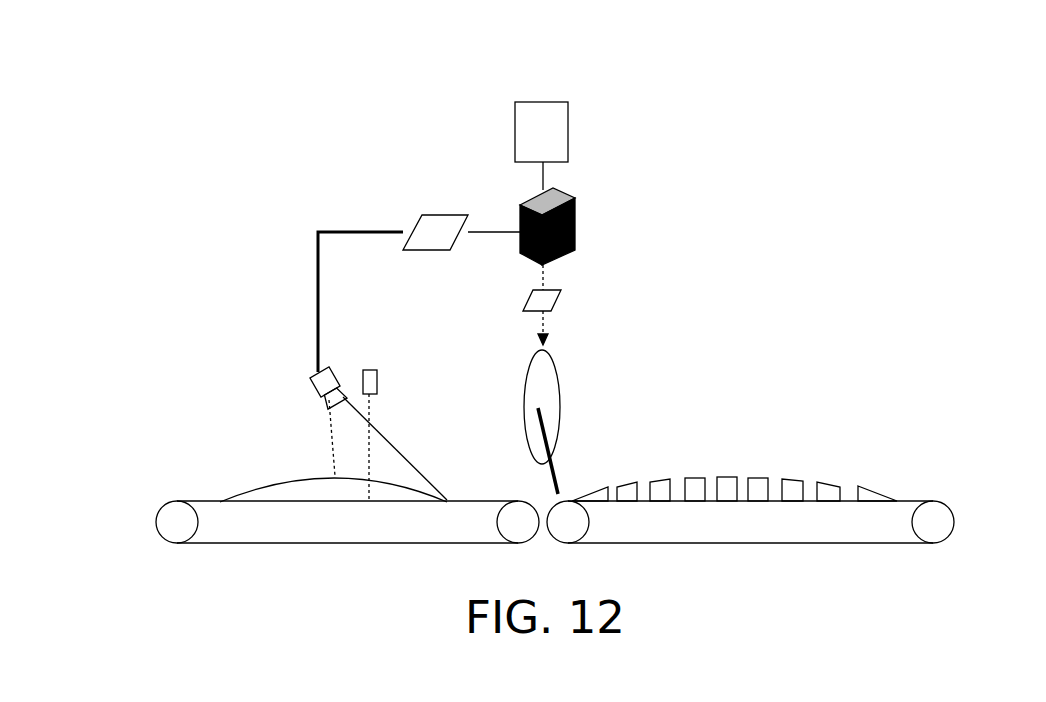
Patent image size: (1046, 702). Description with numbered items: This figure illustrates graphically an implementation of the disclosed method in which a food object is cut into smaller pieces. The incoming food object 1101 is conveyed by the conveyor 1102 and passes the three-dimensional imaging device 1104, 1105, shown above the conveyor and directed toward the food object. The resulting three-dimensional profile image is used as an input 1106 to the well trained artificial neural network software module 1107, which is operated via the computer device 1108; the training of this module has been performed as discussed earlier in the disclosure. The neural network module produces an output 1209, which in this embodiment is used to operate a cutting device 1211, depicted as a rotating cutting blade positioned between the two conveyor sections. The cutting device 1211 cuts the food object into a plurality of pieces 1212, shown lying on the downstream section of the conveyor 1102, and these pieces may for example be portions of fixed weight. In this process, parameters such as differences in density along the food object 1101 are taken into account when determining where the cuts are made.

The food object 1101 is at (273, 483).
The conveyor 1102 is at (215, 523).
The 3D imaging device 1104 is at (310, 380).
The 3D imaging device 1105 is at (378, 384).
The input 1106 is at (416, 228).
The trained artificial neural network software module 1107 is at (515, 118).
The computer device 1108 is at (574, 205).
The output 1209 is at (551, 300).
The cutting device 1211 is at (582, 370).
The plurality of pieces 1212 is at (793, 485).